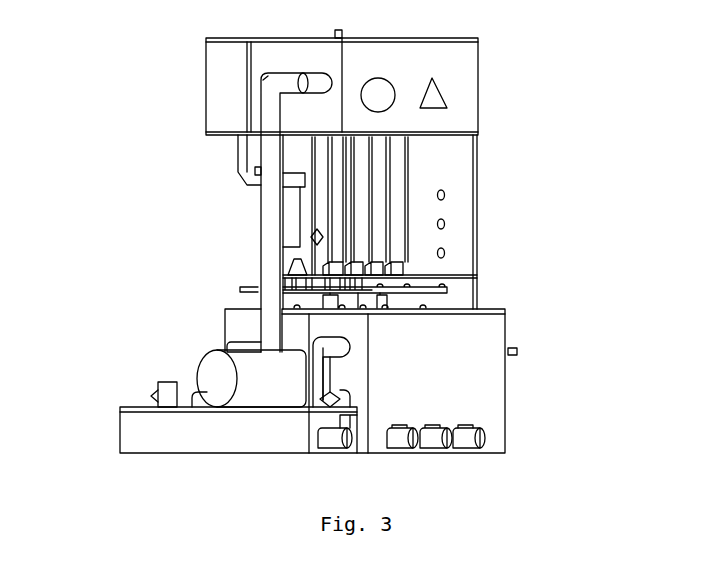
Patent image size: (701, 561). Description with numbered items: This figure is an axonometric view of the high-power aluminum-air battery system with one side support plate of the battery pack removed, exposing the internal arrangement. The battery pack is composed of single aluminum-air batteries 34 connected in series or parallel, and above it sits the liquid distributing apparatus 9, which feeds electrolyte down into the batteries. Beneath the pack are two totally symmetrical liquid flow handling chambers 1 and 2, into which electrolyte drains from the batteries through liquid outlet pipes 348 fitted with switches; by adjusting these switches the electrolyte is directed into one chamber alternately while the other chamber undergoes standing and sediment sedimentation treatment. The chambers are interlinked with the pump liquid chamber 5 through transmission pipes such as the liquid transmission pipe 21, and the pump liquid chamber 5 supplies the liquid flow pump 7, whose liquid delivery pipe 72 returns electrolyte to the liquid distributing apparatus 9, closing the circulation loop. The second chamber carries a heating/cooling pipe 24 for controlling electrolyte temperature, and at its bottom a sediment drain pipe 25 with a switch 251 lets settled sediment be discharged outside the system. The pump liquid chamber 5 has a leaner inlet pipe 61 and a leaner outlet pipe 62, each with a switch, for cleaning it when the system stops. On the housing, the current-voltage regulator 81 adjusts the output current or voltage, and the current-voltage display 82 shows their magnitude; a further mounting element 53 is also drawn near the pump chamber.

The liquid distributing apparatus 9 is at (220, 83).
The current-voltage display 82 is at (393, 80).
The current-voltage regulator 81 is at (447, 93).
The single aluminum-air battery 34 is at (400, 182).
The liquid outlet pipe 348 is at (390, 283).
The liquid delivery pipe 72 is at (272, 210).
The liquid flow handling chamber 1 is at (233, 330).
The liquid flow pump 7 is at (217, 380).
The pump liquid chamber leaner inlet pipe 61 is at (163, 397).
The pump liquid chamber 5 is at (150, 435).
The liquid transmission pipe 21 is at (318, 388).
The liquid flow handling chamber 2 is at (497, 333).
The heating/cooling pipe 24 is at (518, 351).
The pump mount 53 is at (355, 415).
The pump liquid chamber leaner outlet pipe 62 is at (357, 440).
The sediment drain pipe 25 is at (483, 443).
The switch 251 is at (483, 432).